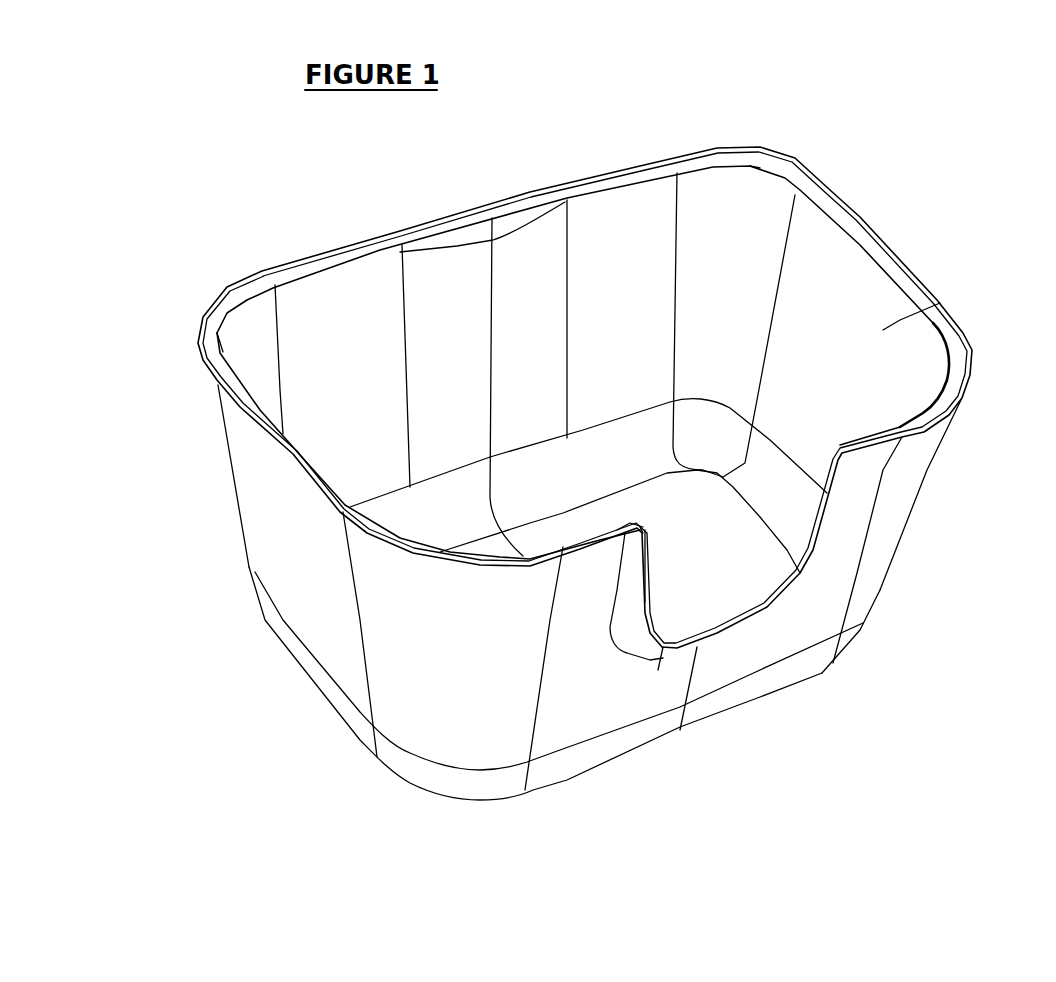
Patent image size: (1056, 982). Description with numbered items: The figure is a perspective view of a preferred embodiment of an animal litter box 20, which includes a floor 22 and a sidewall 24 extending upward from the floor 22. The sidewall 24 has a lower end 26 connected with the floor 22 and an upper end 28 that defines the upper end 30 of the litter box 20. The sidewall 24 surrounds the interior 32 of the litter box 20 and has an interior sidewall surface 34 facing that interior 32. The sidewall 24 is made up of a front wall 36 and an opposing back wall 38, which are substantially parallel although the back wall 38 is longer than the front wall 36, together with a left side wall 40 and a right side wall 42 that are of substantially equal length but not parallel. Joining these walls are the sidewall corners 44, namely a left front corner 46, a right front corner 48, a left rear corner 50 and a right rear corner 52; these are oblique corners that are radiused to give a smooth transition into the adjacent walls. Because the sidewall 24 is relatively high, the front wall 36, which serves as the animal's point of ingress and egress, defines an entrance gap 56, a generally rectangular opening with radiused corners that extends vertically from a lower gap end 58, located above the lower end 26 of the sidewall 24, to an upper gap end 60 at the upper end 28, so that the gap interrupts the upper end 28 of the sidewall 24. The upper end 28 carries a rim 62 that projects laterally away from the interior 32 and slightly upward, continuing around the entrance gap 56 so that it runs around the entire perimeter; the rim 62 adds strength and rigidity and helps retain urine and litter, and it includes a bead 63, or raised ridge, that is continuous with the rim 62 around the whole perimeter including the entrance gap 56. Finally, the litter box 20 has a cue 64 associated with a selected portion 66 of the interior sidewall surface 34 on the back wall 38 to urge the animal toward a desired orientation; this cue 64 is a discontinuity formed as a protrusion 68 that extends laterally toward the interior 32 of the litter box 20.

The litter box 20 is at (943, 211).
The floor 22 is at (760, 567).
The sidewall 24 is at (910, 498).
The lower end 26 is at (653, 473).
The upper end 28 is at (777, 173).
The upper end 30 is at (690, 183).
The interior 32 is at (393, 310).
The interior sidewall surface 34 is at (310, 357).
The front wall 36 is at (563, 733).
The back wall 38 is at (640, 207).
The left side wall 40 is at (313, 618).
The right side wall 42 is at (940, 303).
The sidewall corners 44 is at (544, 459).
The left front corner 46 is at (447, 743).
The right front corner 48 is at (863, 600).
The left rear corner 50 is at (233, 297).
The right rear corner 52 is at (740, 183).
The entrance gap 56 is at (723, 635).
The lower gap end 58 is at (661, 665).
The upper gap end 60 is at (643, 538).
The rim 62 is at (897, 273).
The bead 63 is at (850, 212).
The cue 64 is at (487, 190).
The selected portion 66 is at (533, 350).
The protrusion 68 is at (497, 250).